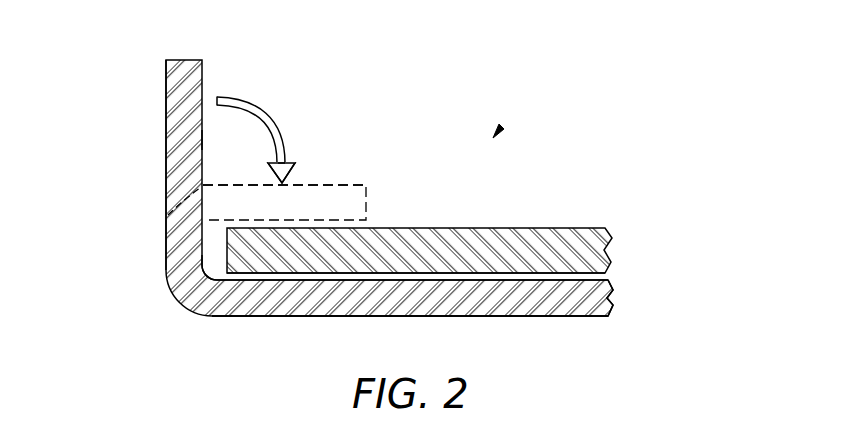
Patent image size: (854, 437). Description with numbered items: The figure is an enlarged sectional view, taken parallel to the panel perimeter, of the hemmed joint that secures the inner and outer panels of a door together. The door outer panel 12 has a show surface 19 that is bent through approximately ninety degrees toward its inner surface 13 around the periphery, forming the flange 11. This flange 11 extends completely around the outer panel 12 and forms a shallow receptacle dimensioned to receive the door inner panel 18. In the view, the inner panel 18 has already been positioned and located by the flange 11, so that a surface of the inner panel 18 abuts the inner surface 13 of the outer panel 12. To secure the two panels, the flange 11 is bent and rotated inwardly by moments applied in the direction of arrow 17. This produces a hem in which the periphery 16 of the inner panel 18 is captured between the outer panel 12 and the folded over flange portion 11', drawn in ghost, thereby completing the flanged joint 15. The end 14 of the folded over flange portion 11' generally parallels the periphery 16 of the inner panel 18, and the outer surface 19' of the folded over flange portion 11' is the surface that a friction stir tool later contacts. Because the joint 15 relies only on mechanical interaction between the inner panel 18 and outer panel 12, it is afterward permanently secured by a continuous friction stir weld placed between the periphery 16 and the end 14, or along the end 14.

The flange 11 is at (342, 172).
The folded over flange portion 11' is at (303, 154).
The door outer panel 12 is at (612, 294).
The inner surface 13 is at (202, 142).
The end of flanged-over portion 14 is at (367, 202).
The flanged joint 15 is at (493, 138).
The periphery of inner panel 16 is at (228, 252).
The arrow 17 is at (232, 102).
The door inner panel 18 is at (518, 250).
The show surface 19 is at (410, 348).
The outer surface of folded over flange portion 19' is at (140, 165).